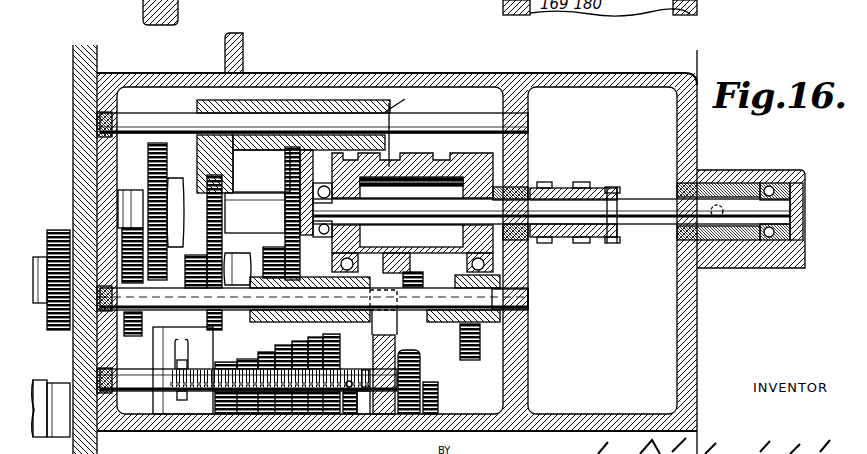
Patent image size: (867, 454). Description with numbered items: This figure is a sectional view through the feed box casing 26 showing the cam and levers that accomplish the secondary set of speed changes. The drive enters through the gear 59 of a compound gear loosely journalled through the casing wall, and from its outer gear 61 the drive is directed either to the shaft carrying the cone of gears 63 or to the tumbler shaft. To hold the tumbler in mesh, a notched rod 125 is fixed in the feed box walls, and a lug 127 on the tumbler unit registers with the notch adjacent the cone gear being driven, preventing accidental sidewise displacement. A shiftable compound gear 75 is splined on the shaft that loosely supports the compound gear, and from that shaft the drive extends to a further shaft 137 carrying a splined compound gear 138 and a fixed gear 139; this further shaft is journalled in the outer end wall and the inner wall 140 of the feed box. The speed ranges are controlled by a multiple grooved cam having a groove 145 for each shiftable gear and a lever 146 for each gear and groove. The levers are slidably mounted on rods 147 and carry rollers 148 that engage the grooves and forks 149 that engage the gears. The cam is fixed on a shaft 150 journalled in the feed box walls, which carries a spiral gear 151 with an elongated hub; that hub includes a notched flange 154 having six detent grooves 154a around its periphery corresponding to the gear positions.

The feed box casing 26 is at (283, 72).
The gear of compound gear 59 is at (131, 330).
The outer gear of compound gear 61 is at (59, 229).
The cone of gears 63 is at (276, 361).
The compound gear 75 is at (470, 360).
The notched rod 125 is at (351, 375).
The lug 127 is at (187, 365).
The further shaft 137 is at (263, 214).
The compound gear 138 is at (217, 224).
The fixed gear 139 is at (298, 208).
The inner wall 140 is at (530, 169).
The groove 145 is at (405, 257).
The lever 146 is at (386, 153).
The rod 147 is at (427, 118).
The roller 148 is at (355, 263).
The fork 149 is at (237, 190).
The cam shaft 150 is at (551, 211).
The spiral gear 151 is at (590, 187).
The notched flange 154 is at (552, 237).
The detent grooves 154a is at (547, 183).